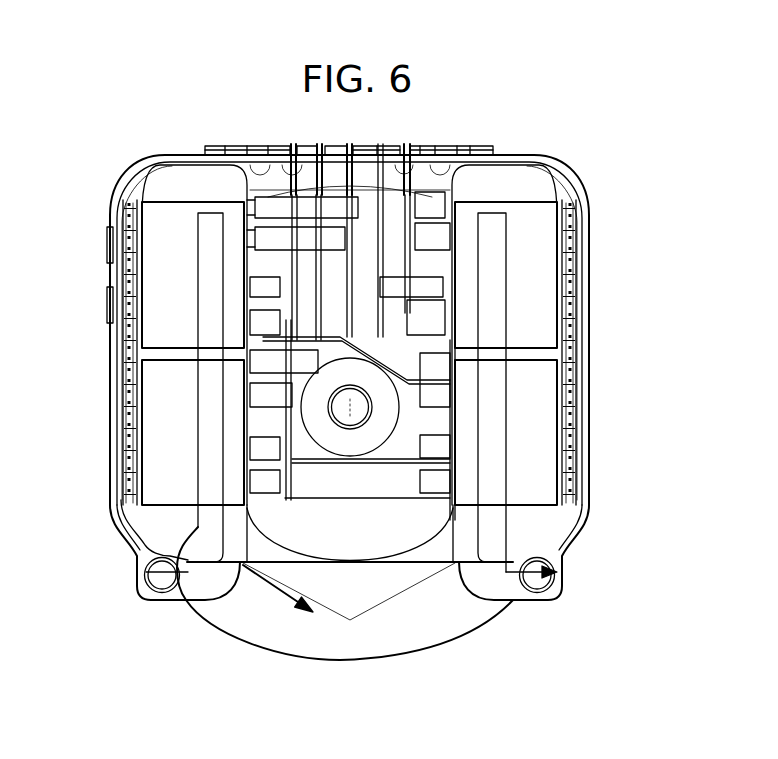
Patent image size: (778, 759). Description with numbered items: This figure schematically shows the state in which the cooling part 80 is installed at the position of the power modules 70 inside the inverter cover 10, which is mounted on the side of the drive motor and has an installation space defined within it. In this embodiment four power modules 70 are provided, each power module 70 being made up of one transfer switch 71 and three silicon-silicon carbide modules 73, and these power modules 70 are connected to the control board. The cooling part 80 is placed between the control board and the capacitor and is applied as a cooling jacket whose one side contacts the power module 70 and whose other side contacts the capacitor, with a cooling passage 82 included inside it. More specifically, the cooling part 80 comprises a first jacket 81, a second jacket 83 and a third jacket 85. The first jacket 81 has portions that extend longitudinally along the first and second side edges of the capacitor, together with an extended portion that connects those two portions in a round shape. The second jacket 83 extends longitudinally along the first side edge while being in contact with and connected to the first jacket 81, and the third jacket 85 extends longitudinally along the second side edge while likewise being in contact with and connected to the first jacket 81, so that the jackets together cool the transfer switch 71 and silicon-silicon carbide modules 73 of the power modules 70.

The inverter cover 10 is at (580, 502).
The power module 70 is at (614, 636).
The transfer switch 71 is at (562, 378).
The silicon-silicon carbide module 73 is at (128, 217).
The cooling part 80 is at (205, 716).
The first jacket 81 is at (290, 615).
The cooling passage 82 is at (130, 528).
The second jacket 83 is at (187, 599).
The third jacket 85 is at (525, 585).